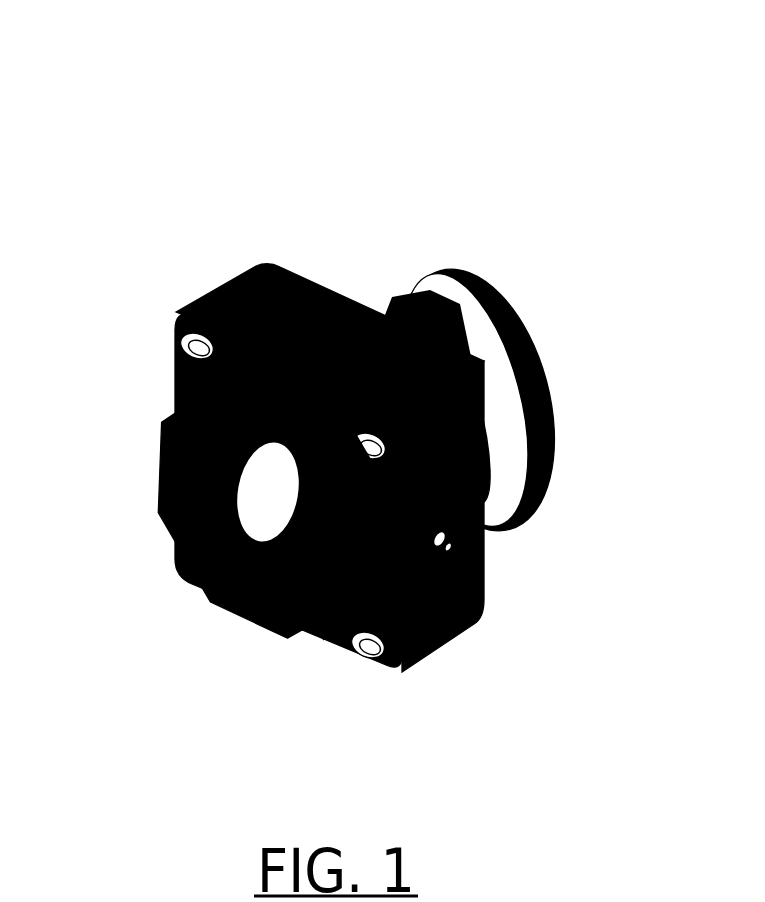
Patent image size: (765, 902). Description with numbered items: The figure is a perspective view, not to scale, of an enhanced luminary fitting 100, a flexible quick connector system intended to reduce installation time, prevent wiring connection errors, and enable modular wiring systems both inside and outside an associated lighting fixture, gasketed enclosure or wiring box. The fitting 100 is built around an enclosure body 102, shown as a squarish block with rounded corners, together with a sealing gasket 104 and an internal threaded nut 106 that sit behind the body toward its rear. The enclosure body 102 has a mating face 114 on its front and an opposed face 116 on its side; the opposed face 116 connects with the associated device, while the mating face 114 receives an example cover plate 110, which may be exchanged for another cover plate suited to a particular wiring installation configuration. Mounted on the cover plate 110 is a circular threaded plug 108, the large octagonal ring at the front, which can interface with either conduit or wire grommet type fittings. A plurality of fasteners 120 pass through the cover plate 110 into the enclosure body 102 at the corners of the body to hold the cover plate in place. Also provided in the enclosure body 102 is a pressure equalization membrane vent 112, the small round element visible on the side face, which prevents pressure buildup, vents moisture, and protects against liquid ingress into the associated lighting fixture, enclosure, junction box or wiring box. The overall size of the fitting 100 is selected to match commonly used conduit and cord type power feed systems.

The enhanced luminary fitting 100 is at (413, 35).
The enclosure body 102 is at (351, 490).
The sealing gasket 104 is at (394, 302).
The internal threaded nut 106 is at (496, 304).
The circular threaded plug 108 is at (224, 547).
The cover plate 110 is at (312, 652).
The pressure equalization membrane vent 112 is at (460, 548).
The mating face 114 is at (404, 612).
The opposed face 116 is at (501, 438).
The fasteners 120 is at (182, 334).